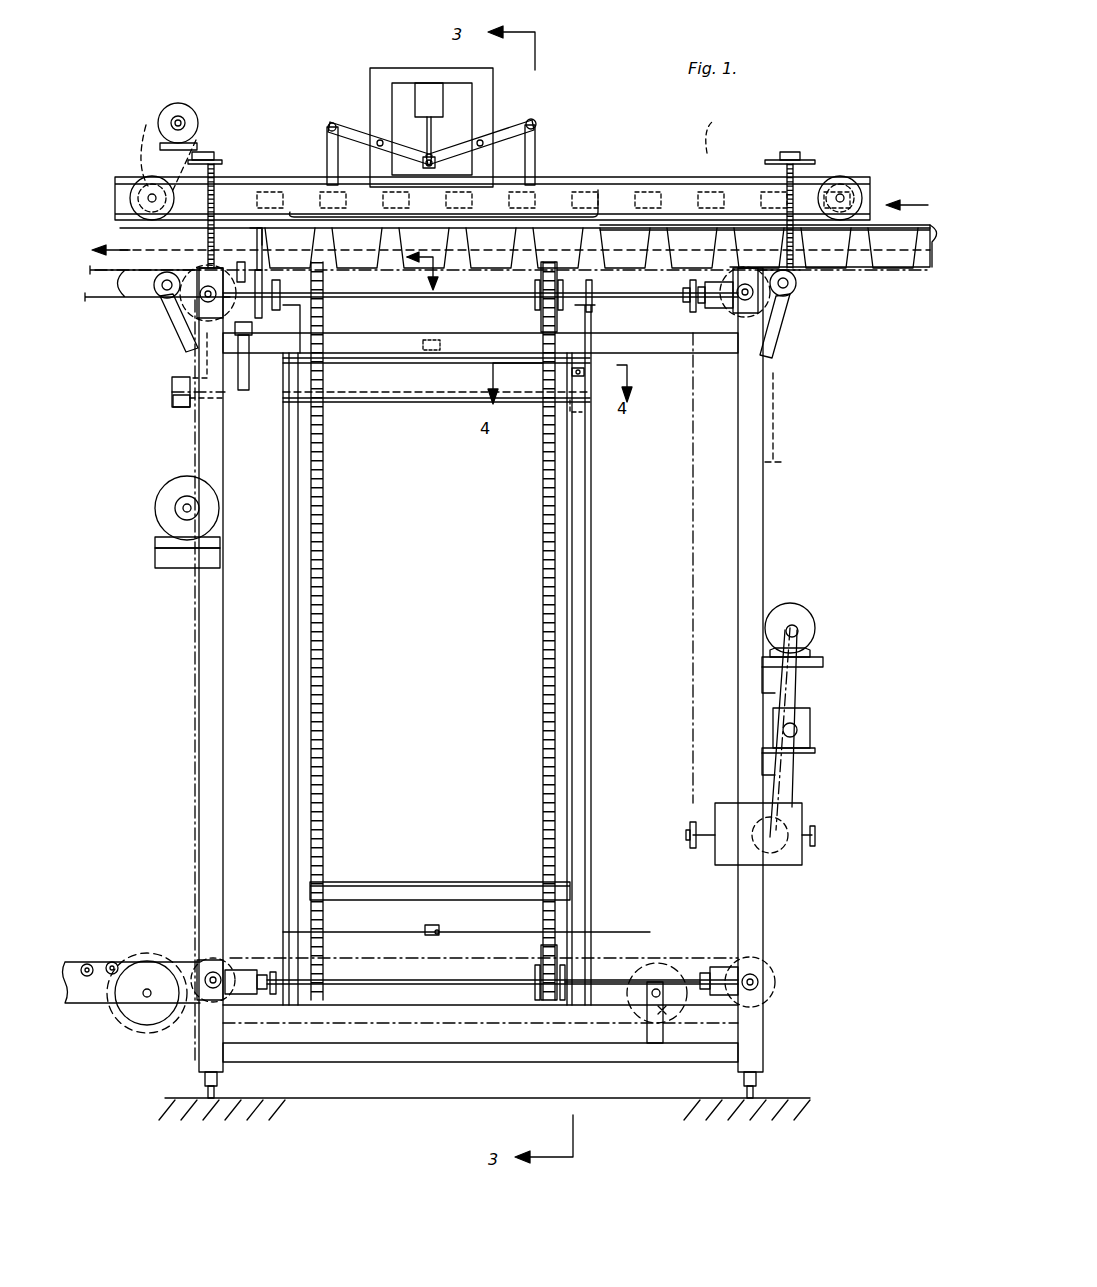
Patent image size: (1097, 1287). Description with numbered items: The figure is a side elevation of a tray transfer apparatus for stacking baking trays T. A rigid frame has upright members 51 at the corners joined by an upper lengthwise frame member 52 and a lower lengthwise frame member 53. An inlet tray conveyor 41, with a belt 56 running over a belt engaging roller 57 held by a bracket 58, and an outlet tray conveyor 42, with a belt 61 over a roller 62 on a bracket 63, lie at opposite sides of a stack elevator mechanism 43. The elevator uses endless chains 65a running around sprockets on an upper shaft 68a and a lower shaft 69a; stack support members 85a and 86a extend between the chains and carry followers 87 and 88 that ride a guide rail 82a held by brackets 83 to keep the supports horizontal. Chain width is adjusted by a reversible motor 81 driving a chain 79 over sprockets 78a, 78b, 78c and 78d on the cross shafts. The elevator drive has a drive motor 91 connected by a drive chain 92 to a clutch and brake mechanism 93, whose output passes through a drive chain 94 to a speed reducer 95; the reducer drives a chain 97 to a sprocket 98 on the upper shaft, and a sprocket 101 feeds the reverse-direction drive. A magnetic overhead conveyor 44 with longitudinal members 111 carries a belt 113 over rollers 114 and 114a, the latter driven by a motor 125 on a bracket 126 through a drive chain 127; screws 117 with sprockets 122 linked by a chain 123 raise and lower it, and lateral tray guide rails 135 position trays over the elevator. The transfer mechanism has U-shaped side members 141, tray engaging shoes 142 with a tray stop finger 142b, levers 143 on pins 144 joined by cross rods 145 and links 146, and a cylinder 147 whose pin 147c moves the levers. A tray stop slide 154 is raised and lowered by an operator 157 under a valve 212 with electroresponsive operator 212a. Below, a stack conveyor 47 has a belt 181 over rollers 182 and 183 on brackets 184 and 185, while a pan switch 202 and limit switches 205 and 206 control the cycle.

The inlet tray conveyor 41 is at (828, 265).
The outlet tray conveyor 42 is at (125, 300).
The stack elevator mechanism 43 is at (590, 503).
The magnetic overhead conveyor 44 is at (623, 222).
The stack conveyor 47 is at (609, 958).
The upright members 51 is at (765, 536).
The upper lengthwise extending frame member 52 is at (666, 353).
The lower lengthwise extending frame member 53 is at (642, 1062).
The belt 56 is at (926, 270).
The belt engaging roller 57 is at (790, 292).
The bracket 58 is at (790, 326).
The belt 61 is at (150, 258).
The belt engaging roller 62 is at (162, 300).
The bracket 63 is at (178, 327).
The endless chains 65a is at (328, 846).
The upper shaft 68a is at (636, 298).
The lower shaft 69a is at (630, 968).
The sprocket 78a is at (195, 272).
The sprocket 78b is at (736, 320).
The sprocket 78c is at (776, 961).
The sprocket 78d is at (236, 1010).
The chain 79 is at (778, 441).
The reversible motor 81 is at (157, 502).
The guide rail 82a is at (590, 702).
The brackets 83 is at (592, 305).
The stack support member 85a is at (400, 402).
The stack support member 86a is at (405, 882).
The follower 87 is at (585, 373).
The follower 88 is at (582, 418).
The drive motor 91 is at (800, 612).
The drive chain 92 is at (800, 687).
The clutch and brake mechanism 93 is at (812, 729).
The drive chain 94 is at (793, 786).
The speed reducer 95 is at (805, 851).
The chain 97 is at (690, 658).
The sprocket 98 is at (690, 291).
The sprocket 101 is at (816, 831).
The longitudinal members 111 is at (790, 177).
The belt 113 is at (826, 186).
The roller 114 is at (850, 180).
The roller 114a is at (140, 176).
The screws 117 is at (216, 176).
The sprockets 122 is at (792, 160).
The chain 123 is at (707, 150).
The motor 125 is at (178, 104).
The bracket 126 is at (205, 158).
The drive chain 127 is at (143, 126).
The lateral tray guide rails 135 is at (680, 268).
The U-shaped side members 141 is at (494, 98).
The tray engaging shoes 142 is at (327, 150).
The tray stop finger 142b is at (598, 190).
The levers 143 is at (508, 122).
The pins 144 is at (376, 135).
The cross rods 145 is at (540, 122).
The links 146 is at (538, 152).
The cylinder 147 is at (450, 92).
The pin 147c is at (436, 158).
The slide 154 is at (263, 256).
The operator 157 is at (242, 392).
The belt 181 is at (460, 958).
The roller 182 is at (668, 1011).
The roller 183 is at (148, 1025).
The bracket 184 is at (664, 1034).
The bracket 185 is at (175, 972).
The pan switch 202 is at (258, 226).
The limit switch 205 is at (424, 928).
The limit switch 206 is at (416, 340).
The valve 212 is at (172, 385).
The electroresponsive operator 212a is at (173, 405).
The baking tray T is at (600, 236).